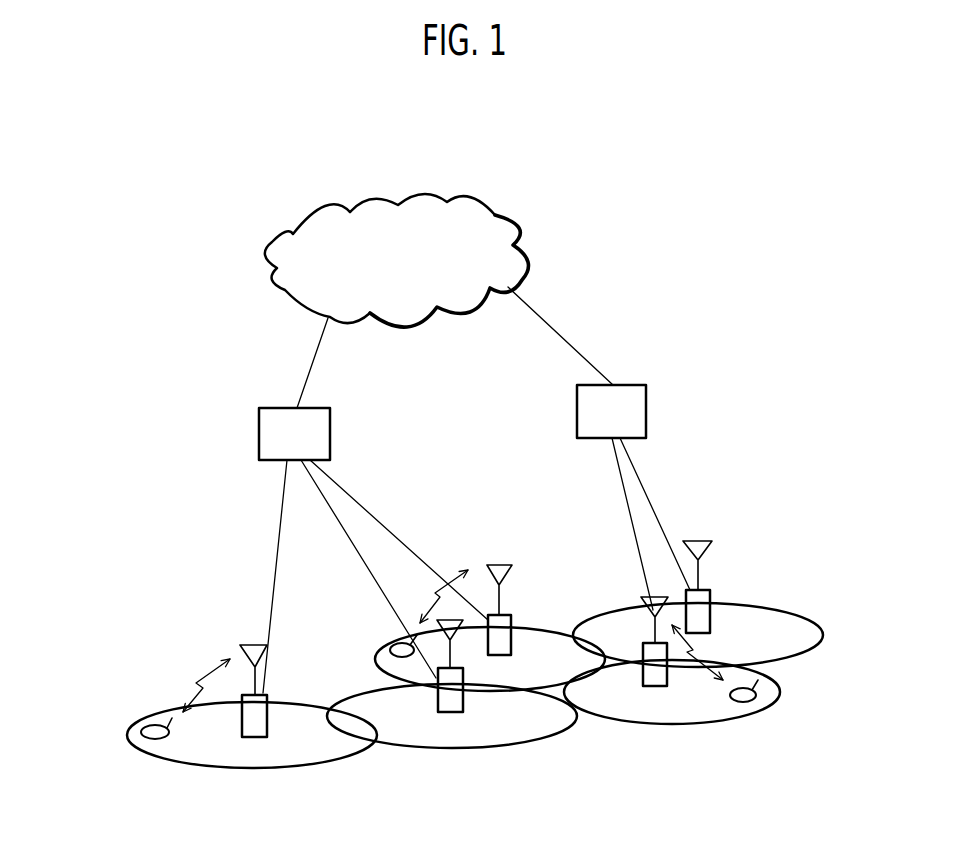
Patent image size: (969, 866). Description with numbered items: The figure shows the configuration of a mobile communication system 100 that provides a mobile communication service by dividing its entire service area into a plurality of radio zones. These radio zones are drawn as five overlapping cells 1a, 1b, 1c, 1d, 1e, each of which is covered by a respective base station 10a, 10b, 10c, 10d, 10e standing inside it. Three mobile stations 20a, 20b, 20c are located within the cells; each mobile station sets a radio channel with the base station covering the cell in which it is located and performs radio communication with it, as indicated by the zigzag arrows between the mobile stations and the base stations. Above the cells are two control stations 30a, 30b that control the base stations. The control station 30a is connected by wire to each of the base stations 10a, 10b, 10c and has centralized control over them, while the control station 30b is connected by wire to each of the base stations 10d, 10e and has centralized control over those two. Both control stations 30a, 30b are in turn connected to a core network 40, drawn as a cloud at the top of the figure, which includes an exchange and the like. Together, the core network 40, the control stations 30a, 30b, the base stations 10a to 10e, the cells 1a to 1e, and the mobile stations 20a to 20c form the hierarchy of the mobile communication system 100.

The mobile communication system 100 is at (705, 257).
The core network 40 is at (528, 250).
The control station 30a is at (330, 432).
The control station 30b is at (646, 405).
The base station 10a is at (251, 740).
The base station 10b is at (446, 713).
The base station 10c is at (504, 614).
The base station 10d is at (652, 688).
The base station 10e is at (706, 587).
The cell 1a is at (182, 768).
The cell 1b is at (392, 750).
The cell 1c is at (540, 632).
The cell 1d is at (604, 725).
The cell 1e is at (786, 612).
The mobile station 20a is at (146, 740).
The mobile station 20b is at (395, 643).
The mobile station 20c is at (757, 700).